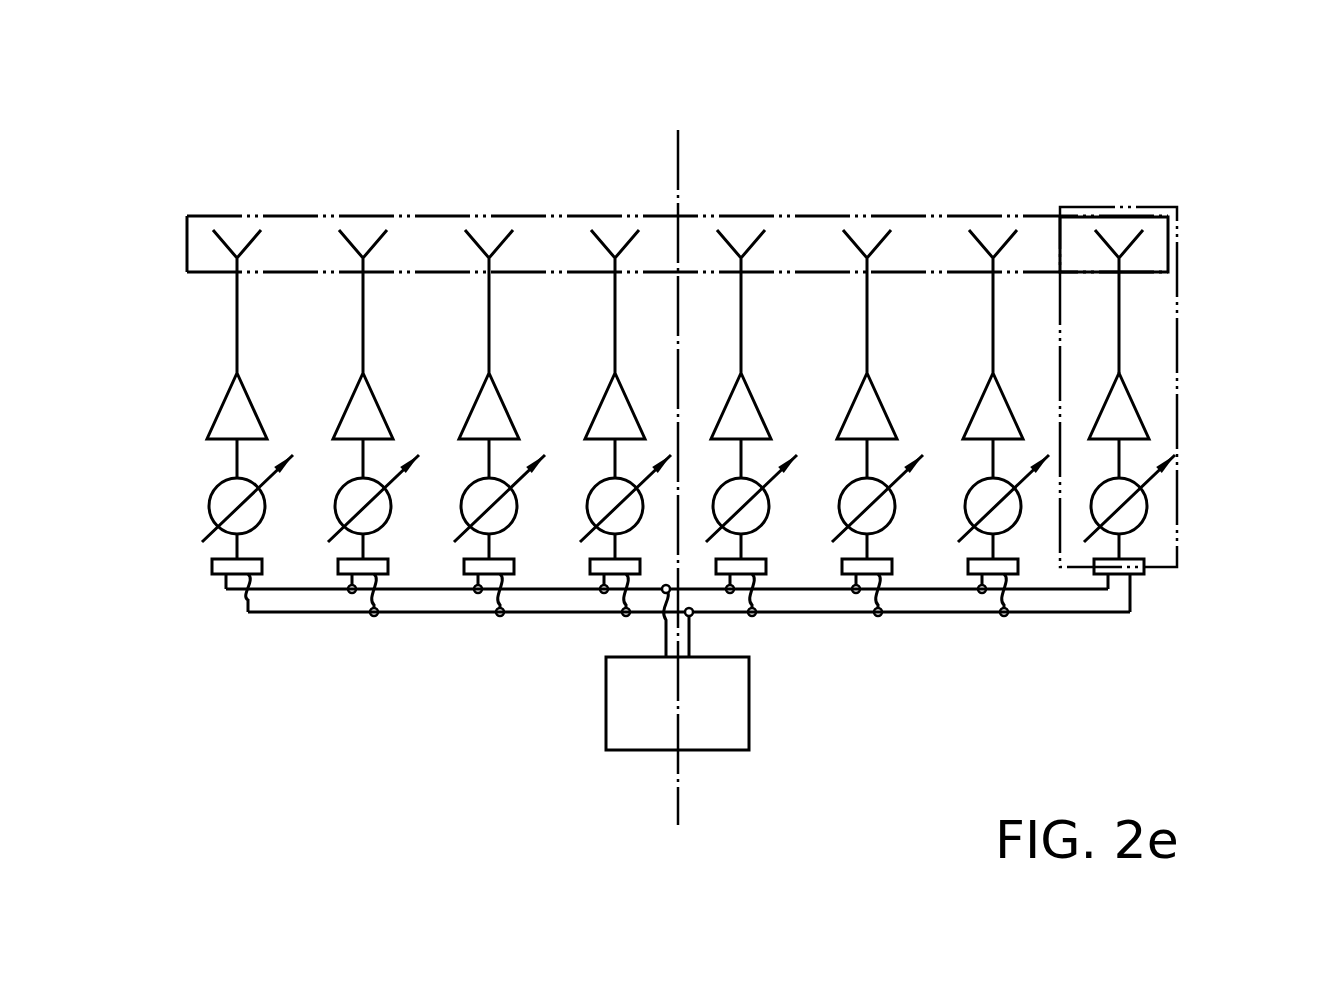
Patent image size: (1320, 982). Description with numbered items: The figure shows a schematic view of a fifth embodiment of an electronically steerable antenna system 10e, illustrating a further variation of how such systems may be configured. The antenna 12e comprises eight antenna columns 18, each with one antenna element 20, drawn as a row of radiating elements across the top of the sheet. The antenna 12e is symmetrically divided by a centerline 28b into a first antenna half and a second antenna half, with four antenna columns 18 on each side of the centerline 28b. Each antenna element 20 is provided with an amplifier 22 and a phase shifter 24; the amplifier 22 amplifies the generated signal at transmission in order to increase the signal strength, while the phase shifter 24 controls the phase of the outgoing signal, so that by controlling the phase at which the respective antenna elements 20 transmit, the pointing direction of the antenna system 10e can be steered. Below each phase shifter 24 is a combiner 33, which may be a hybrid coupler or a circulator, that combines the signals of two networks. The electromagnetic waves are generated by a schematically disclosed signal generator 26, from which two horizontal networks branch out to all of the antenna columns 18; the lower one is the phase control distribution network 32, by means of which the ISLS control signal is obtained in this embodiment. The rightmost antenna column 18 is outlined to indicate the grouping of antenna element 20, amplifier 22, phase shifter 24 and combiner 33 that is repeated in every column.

The electronically steerable antenna system 10e is at (602, 74).
The antenna 12e is at (203, 155).
The centerline 28b is at (680, 152).
The antenna column 18 is at (1155, 207).
The antenna element 20 is at (1168, 241).
The amplifier 22 is at (1135, 402).
The phase shifter 24 is at (1147, 505).
The combiner 33 is at (1144, 571).
The phase control distribution network 32 is at (950, 612).
The signal generator 26 is at (749, 700).